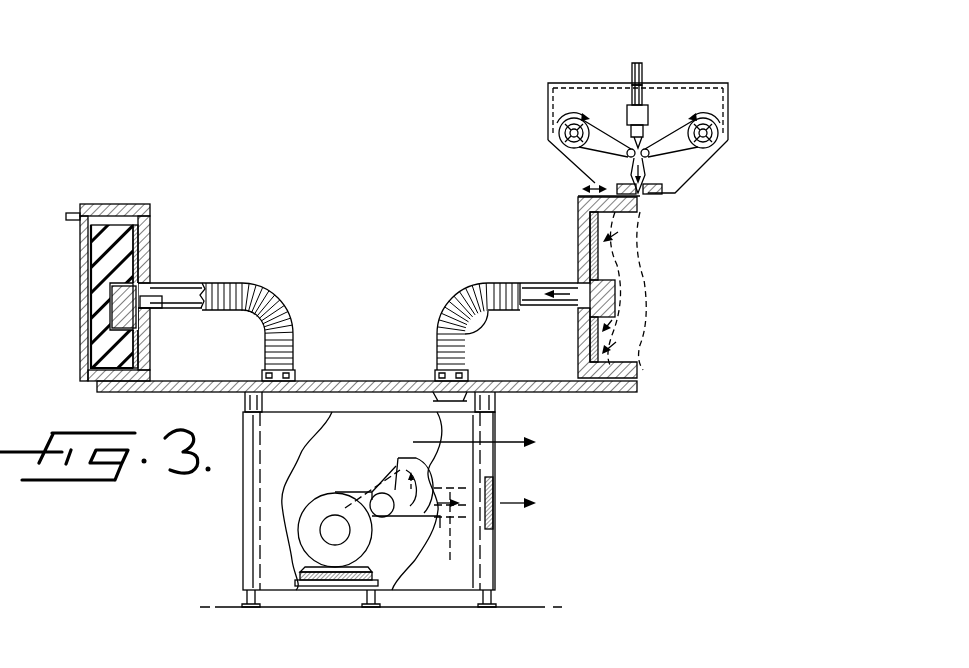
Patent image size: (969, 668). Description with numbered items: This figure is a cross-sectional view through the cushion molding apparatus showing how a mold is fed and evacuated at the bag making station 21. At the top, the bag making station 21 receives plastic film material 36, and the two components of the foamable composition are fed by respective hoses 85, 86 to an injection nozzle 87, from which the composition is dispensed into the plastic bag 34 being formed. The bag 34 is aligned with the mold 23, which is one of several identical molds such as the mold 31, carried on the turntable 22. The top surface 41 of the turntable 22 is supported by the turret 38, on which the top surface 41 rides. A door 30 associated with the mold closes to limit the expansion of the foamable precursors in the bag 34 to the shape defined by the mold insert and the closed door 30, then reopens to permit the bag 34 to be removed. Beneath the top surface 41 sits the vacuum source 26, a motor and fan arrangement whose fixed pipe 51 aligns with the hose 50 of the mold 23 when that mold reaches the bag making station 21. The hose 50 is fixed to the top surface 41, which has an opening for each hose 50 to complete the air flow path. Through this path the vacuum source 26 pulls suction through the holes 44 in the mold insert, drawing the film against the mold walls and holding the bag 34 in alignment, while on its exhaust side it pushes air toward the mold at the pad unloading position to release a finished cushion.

The bag making station 21 is at (726, 60).
The turntable 22 is at (203, 517).
The mold 23 is at (578, 212).
The vacuum source 26 is at (338, 495).
The door 30 is at (80, 255).
The mold 31 is at (113, 212).
The plastic bag 34 is at (633, 259).
The plastic film material 36 is at (716, 152).
The turret 38 is at (350, 501).
The top surface 41 is at (348, 381).
The holes 44 is at (608, 326).
The hose 50 is at (282, 300).
The fixed pipe 51 is at (452, 434).
The hose 85 is at (637, 63).
The hose 86 is at (646, 78).
The injection nozzle 87 is at (645, 118).